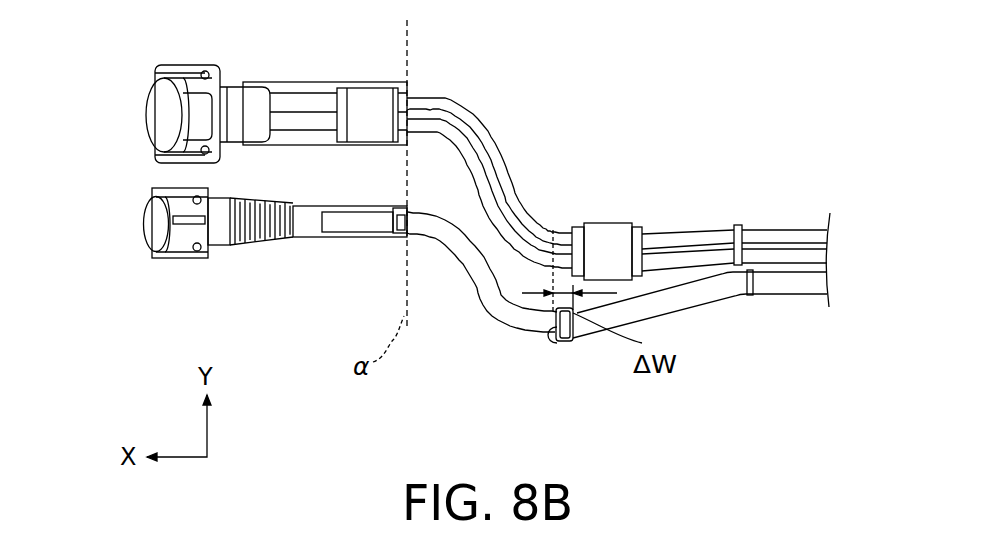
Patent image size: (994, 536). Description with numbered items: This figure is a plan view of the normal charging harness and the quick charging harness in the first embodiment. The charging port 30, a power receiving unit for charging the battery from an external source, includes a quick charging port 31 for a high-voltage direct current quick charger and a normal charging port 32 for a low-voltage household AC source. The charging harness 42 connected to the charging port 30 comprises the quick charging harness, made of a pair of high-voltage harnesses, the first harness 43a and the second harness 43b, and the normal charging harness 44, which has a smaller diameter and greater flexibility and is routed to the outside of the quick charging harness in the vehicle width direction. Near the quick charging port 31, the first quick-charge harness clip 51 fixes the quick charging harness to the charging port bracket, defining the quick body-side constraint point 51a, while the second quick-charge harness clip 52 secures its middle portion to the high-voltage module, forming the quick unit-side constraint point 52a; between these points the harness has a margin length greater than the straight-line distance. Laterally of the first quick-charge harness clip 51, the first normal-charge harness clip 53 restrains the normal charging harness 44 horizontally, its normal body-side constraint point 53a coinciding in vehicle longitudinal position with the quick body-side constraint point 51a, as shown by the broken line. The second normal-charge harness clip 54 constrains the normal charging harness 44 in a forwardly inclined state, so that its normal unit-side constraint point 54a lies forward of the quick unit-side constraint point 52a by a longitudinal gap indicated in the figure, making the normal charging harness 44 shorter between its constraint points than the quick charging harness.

The charging port 30 is at (75, 112).
The quick charging port 31 is at (157, 125).
The normal charging port 32 is at (153, 218).
The charging harness 42 is at (568, 48).
The first harness 43a is at (473, 122).
The second harness 43b is at (485, 168).
The normal charging harness 44 is at (487, 303).
The first quick-charge harness clip 51 is at (365, 103).
The quick body-side constraint point 51a is at (413, 95).
The second quick-charge harness clip 52 is at (612, 232).
The quick unit-side constraint point 52a is at (558, 232).
The first normal-charge harness clip 53 is at (397, 236).
The normal body-side constraint point 53a is at (417, 237).
The second normal-charge harness clip 54 is at (560, 341).
The normal unit-side constraint point 54a is at (547, 328).